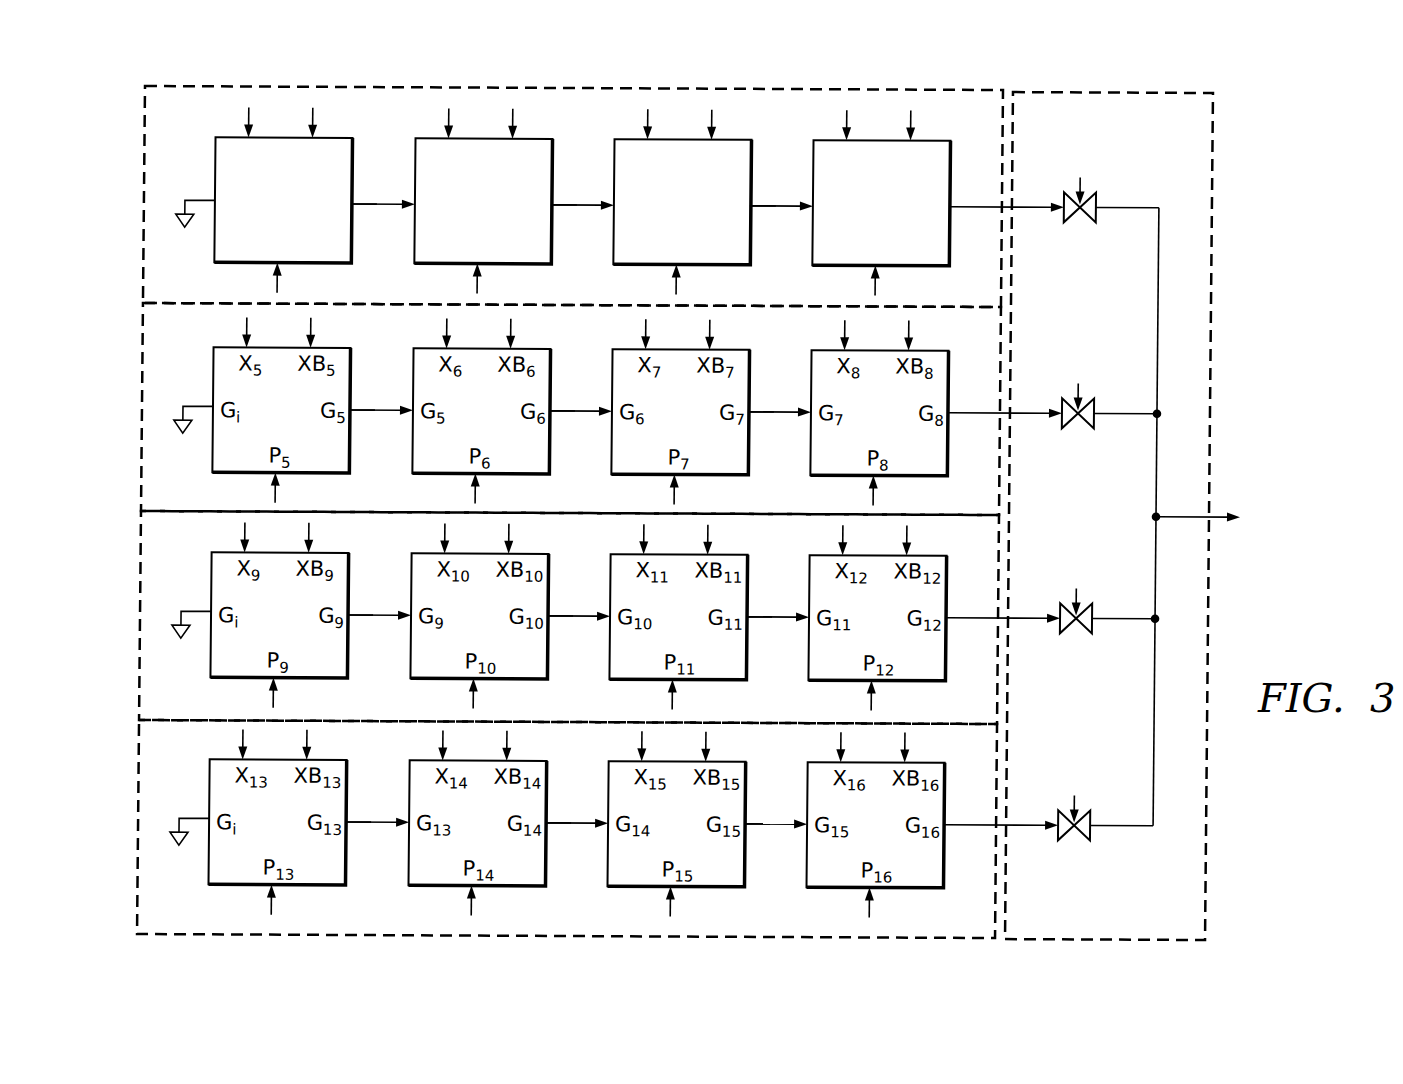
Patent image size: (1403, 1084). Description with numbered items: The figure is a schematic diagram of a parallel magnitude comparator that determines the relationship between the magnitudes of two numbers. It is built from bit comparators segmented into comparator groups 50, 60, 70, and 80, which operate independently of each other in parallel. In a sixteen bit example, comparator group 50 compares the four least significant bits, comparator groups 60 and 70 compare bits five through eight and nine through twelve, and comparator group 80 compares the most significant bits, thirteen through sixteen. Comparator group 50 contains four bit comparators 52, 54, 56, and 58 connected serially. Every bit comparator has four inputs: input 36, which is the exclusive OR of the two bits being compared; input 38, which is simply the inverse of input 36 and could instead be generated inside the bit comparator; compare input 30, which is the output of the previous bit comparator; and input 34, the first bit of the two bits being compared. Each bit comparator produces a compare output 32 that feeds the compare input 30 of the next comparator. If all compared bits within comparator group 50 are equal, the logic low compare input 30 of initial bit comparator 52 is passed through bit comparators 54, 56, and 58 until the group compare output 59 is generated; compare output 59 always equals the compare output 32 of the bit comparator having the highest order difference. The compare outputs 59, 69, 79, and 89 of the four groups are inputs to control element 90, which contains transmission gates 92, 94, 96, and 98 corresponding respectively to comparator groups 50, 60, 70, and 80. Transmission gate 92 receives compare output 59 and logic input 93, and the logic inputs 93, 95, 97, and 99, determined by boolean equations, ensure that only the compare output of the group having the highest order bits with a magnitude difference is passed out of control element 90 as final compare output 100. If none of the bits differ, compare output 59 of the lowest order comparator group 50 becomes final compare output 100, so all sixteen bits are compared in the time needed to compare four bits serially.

The compare input 30 is at (492, 500).
The compare output 32 is at (568, 538).
The input 34 is at (550, 592).
The input 36 is at (521, 433).
The input 38 is at (633, 434).
The comparator group 50 is at (164, 289).
The bit comparator 52 is at (283, 200).
The bit comparator 54 is at (483, 201).
The bit comparator 56 is at (682, 202).
The bit comparator 58 is at (881, 203).
The compare output 59 is at (1006, 228).
The comparator group 60 is at (163, 499).
The compare output 69 is at (1005, 434).
The comparator group 70 is at (162, 704).
The compare output 79 is at (1003, 639).
The comparator group 80 is at (161, 921).
The compare output 89 is at (1001, 846).
The control element 90 is at (1094, 924).
The transmission gate 92 is at (1098, 191).
The logic input 93 is at (1079, 176).
The transmission gate 94 is at (1098, 397).
The logic input 95 is at (1079, 383).
The transmission gate 96 is at (1098, 602).
The logic input 97 is at (1079, 588).
The transmission gate 98 is at (1098, 809).
The logic input 99 is at (1079, 796).
The final compare output 100 is at (1162, 511).